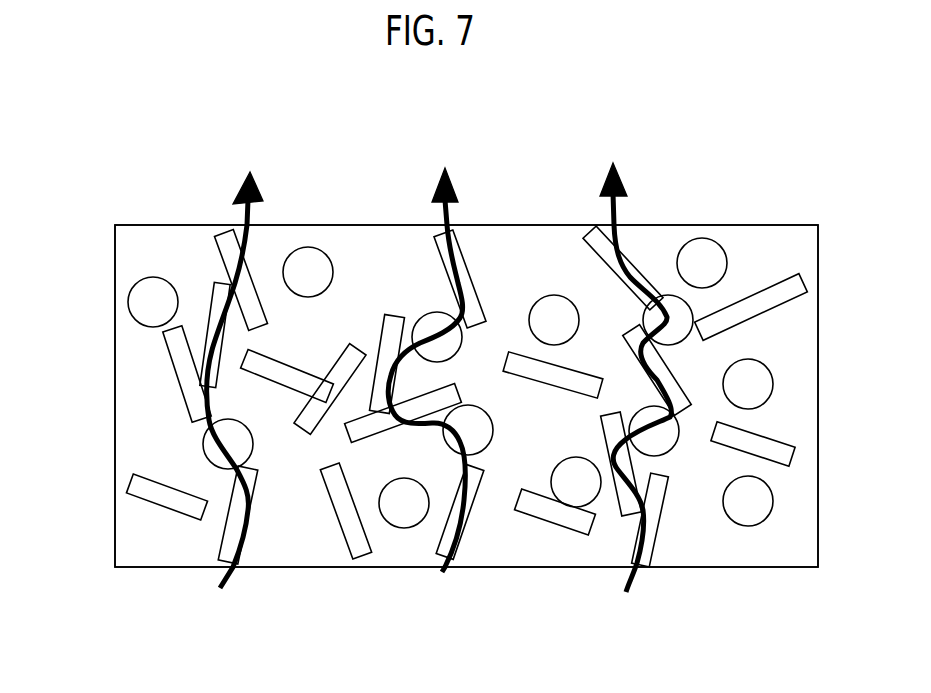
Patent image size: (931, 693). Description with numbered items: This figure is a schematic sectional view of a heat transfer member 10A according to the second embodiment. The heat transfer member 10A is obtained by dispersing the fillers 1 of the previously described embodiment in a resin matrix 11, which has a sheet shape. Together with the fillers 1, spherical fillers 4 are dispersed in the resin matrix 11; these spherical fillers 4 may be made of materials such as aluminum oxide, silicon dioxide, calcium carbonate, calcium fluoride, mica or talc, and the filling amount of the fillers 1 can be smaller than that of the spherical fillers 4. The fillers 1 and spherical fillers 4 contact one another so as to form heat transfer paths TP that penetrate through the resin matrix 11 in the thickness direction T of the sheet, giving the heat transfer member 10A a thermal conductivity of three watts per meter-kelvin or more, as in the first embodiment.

The heat transfer member 10A is at (754, 154).
The resin matrix 11 is at (128, 398).
The filler 1 is at (767, 300).
The spherical filler 4 is at (552, 308).
The heat transfer path TP is at (240, 212).
The thickness direction T is at (30, 305).